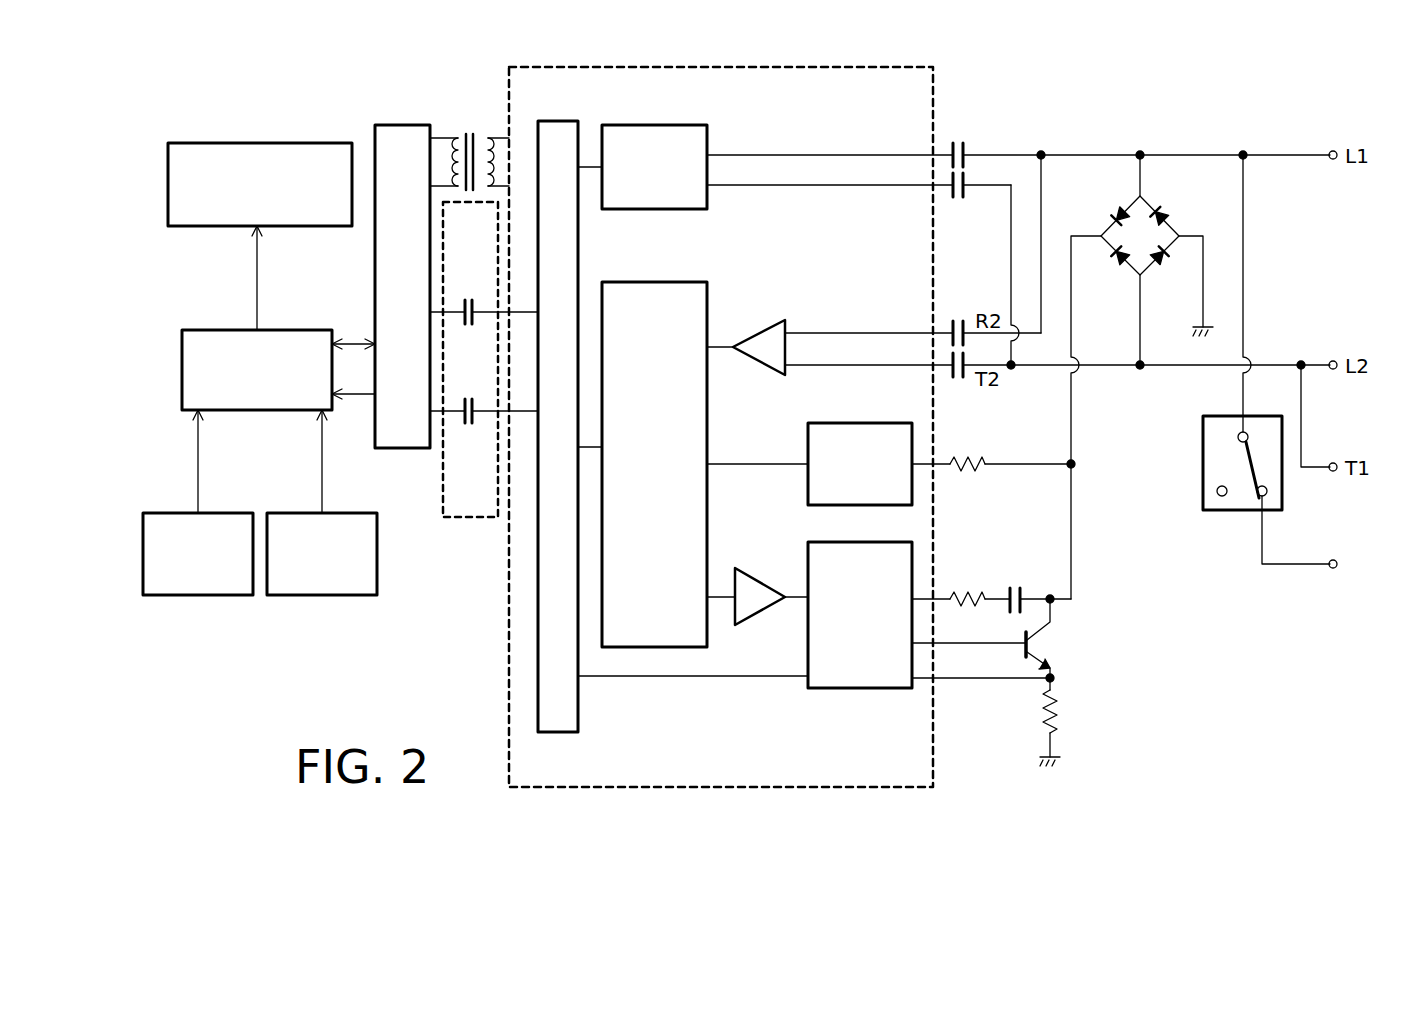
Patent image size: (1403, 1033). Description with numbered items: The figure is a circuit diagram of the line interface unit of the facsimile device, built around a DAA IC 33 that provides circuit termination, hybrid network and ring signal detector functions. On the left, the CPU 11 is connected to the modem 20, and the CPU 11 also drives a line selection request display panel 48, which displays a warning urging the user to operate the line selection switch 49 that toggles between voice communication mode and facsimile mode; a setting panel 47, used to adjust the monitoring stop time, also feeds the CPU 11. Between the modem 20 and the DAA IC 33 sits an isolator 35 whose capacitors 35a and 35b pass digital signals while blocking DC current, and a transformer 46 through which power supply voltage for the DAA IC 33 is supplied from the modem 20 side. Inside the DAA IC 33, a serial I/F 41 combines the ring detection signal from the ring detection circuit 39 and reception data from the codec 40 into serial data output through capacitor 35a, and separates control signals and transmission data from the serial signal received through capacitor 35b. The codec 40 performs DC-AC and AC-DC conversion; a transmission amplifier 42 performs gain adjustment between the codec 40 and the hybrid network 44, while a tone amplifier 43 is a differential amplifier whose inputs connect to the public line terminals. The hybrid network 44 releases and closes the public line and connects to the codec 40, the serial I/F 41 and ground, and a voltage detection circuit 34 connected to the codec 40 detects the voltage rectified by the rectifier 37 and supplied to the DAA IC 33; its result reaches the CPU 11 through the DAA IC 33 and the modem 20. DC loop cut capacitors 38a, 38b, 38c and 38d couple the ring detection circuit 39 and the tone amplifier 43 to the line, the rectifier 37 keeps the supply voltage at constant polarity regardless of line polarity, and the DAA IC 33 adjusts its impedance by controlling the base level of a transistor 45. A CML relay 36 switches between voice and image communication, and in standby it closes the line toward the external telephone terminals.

The CPU 11 is at (224, 301).
The modem 20 is at (410, 125).
The DAA IC 33 is at (509, 661).
The voltage detection circuit 34 is at (870, 423).
The isolator 35 is at (467, 359).
The capacitor 35a is at (488, 276).
The capacitor 35b is at (488, 377).
The CML relay 36 is at (1203, 465).
The rectifier 37 is at (1174, 222).
The DC loop cut capacitor 38a is at (979, 120).
The DC loop cut capacitor 38b is at (958, 199).
The DC loop cut capacitor 38c is at (957, 318).
The DC loop cut capacitor 38d is at (960, 379).
The ring detection circuit 39 is at (665, 125).
The codec 40 is at (707, 428).
The serial I/F 41 is at (578, 715).
The transmission amplifier 42 is at (765, 580).
The tone amplifier 43 is at (762, 330).
The hybrid network 44 is at (860, 688).
The transistor 45 is at (1053, 647).
The transformer 46 is at (467, 132).
The setting panel 47 is at (322, 596).
The line selection request display panel 48 is at (277, 143).
The line selection switch 49 is at (198, 596).